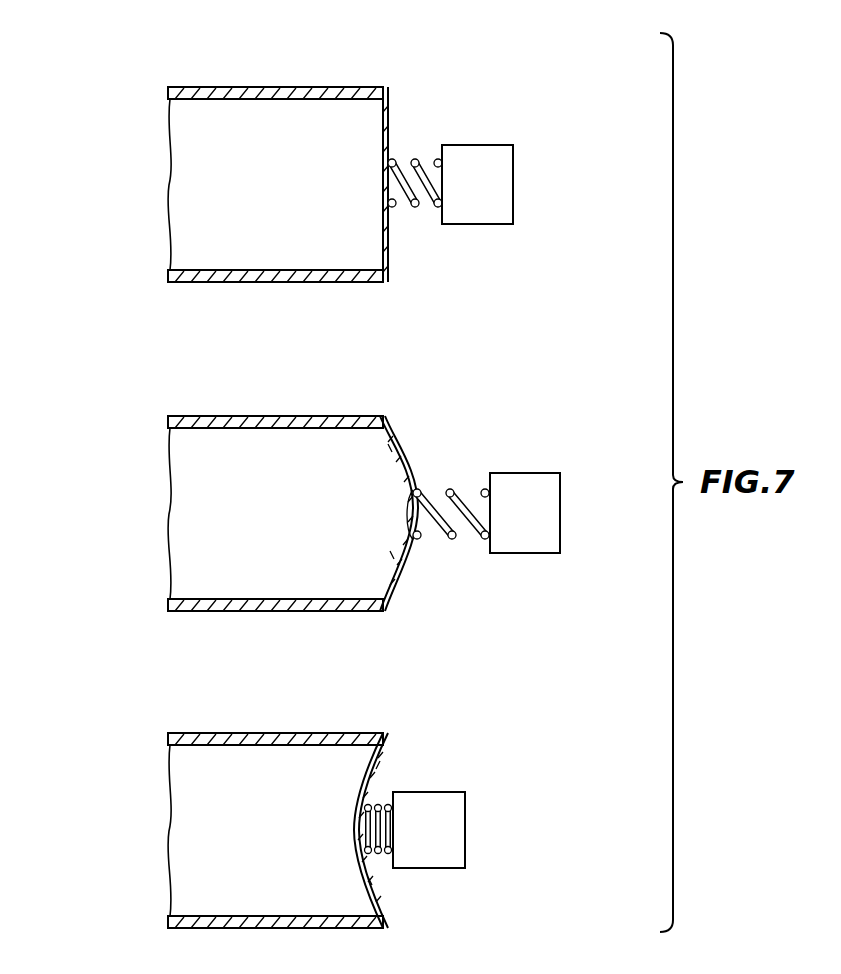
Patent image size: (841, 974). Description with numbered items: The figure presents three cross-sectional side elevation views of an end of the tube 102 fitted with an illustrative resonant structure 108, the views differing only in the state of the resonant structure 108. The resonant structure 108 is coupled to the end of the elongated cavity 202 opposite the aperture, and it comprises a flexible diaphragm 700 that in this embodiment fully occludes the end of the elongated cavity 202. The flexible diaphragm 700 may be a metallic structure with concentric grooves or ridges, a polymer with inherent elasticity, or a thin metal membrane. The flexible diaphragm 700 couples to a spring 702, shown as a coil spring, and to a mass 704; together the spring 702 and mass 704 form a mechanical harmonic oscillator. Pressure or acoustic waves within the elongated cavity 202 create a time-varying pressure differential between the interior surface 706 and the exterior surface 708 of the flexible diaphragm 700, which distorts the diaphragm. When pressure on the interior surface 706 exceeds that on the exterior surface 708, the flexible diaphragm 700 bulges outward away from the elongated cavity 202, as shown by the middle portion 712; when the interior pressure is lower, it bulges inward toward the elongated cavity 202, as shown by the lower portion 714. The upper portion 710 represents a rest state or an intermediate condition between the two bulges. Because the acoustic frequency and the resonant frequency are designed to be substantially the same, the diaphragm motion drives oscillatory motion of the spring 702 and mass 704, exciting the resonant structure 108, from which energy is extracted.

The tube 102 is at (270, 87).
The resonant structure 108 is at (480, 67).
The elongated cavity 202 is at (283, 196).
The flexible diaphragm 700 is at (390, 135).
The spring 702 is at (383, 215).
The mass 704 is at (498, 200).
The interior surface 706 is at (383, 118).
The exterior surface 708 is at (390, 112).
The upper portion 710 is at (150, 167).
The middle portion 712 is at (150, 496).
The lower portion 714 is at (150, 813).